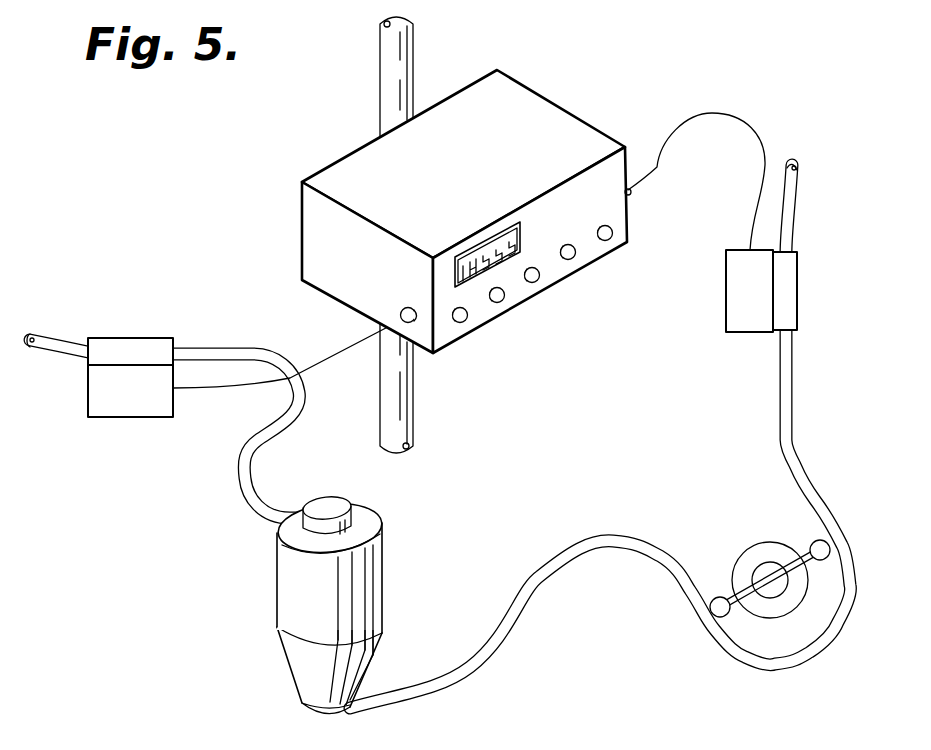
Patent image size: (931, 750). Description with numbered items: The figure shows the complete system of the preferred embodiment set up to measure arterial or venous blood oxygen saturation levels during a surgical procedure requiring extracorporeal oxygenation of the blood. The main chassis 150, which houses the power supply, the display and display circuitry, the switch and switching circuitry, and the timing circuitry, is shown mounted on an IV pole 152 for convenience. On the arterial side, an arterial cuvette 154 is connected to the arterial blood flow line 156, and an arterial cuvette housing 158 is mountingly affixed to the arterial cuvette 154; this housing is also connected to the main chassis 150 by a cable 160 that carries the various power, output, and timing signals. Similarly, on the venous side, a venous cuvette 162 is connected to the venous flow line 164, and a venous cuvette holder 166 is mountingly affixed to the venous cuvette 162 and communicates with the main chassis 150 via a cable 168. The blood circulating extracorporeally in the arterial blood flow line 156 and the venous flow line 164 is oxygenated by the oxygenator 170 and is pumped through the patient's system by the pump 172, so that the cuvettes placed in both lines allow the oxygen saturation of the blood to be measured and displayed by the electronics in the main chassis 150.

The main chassis 150 is at (308, 205).
The IV pole 152 is at (378, 54).
The arterial cuvette 154 is at (800, 271).
The arterial blood flow line 156 is at (794, 197).
The arterial cuvette housing 158 is at (735, 290).
The cable 160 is at (657, 170).
The venous cuvette 162 is at (120, 338).
The venous flow line 164 is at (227, 348).
The venous cuvette holder 166 is at (135, 407).
The cable 168 is at (340, 355).
The oxygenator 170 is at (278, 577).
The pump 172 is at (760, 542).